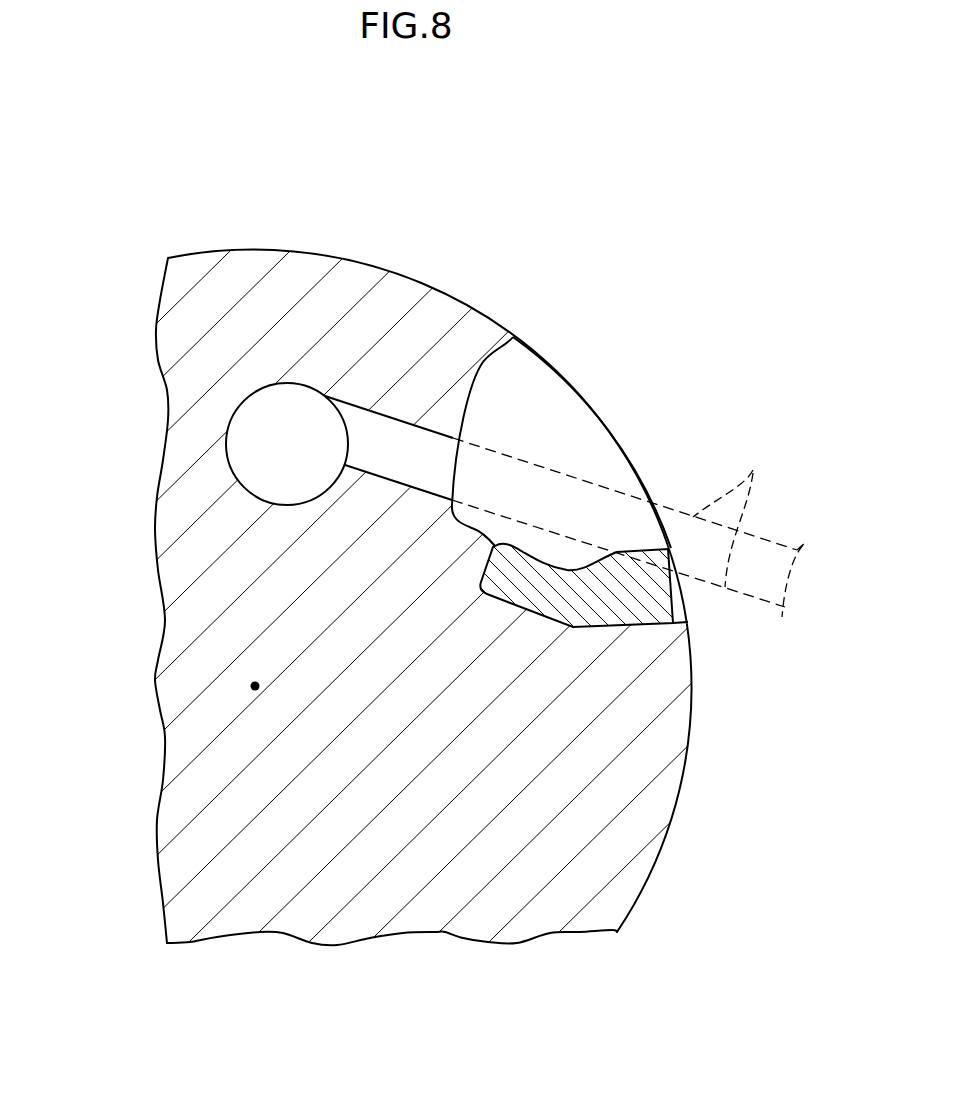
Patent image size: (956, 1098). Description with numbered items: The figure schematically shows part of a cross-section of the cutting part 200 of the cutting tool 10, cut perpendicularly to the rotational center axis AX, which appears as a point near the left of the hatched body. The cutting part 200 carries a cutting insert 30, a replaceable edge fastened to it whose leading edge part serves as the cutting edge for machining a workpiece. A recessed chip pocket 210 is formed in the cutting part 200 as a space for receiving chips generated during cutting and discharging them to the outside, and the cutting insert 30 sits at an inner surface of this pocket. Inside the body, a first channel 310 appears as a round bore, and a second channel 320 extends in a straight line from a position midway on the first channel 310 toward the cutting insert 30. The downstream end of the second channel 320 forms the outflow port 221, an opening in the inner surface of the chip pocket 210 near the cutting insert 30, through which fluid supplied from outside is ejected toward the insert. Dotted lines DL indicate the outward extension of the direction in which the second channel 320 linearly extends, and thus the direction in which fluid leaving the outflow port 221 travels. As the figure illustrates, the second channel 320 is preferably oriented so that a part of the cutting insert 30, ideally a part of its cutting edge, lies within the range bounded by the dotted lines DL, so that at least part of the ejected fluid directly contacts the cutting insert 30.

The cutting tool 10 is at (550, 207).
The cutting part 200 is at (677, 803).
The chip pocket 210 is at (590, 453).
The outflow port 221 is at (457, 472).
The cutting insert 30 is at (688, 607).
The first channel 310 is at (287, 404).
The second channel 320 is at (380, 408).
The rotational center axis AX is at (250, 685).
The dotted lines DL is at (629, 527).